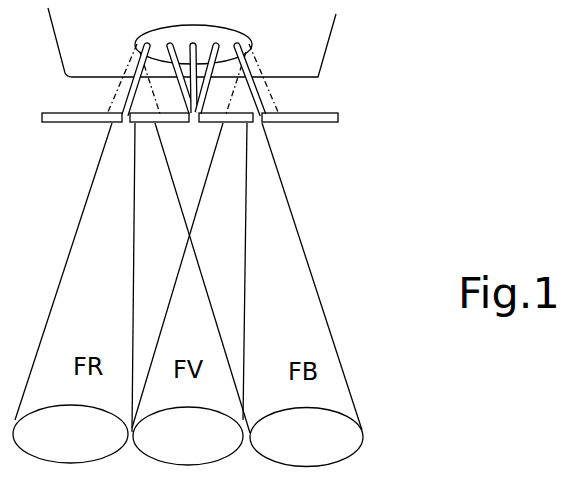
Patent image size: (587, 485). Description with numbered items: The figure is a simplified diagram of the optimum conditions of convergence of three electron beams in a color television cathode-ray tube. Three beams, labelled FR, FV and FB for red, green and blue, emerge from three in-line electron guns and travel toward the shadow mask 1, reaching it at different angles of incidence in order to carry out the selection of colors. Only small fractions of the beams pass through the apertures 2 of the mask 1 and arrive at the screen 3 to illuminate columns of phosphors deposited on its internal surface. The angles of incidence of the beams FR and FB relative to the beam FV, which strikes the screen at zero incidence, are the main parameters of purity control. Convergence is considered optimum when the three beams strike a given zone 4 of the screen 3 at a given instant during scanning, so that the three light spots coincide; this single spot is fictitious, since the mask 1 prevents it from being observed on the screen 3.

The shadow mask 1 is at (342, 120).
The apertures 2 is at (197, 113).
The screen 3 is at (330, 43).
The zone 4 is at (236, 40).